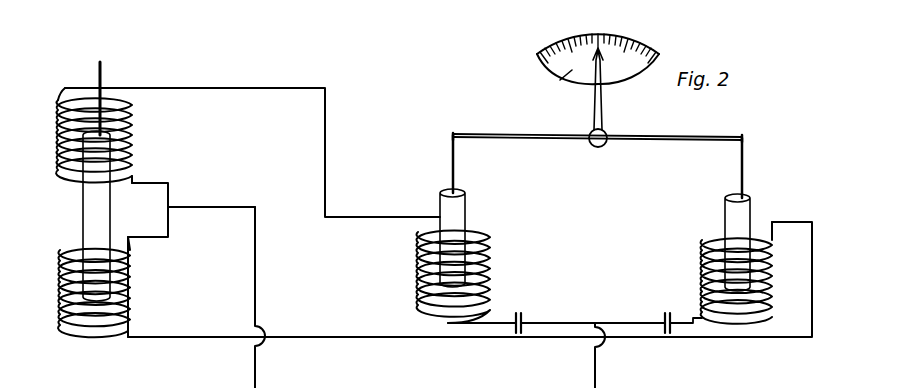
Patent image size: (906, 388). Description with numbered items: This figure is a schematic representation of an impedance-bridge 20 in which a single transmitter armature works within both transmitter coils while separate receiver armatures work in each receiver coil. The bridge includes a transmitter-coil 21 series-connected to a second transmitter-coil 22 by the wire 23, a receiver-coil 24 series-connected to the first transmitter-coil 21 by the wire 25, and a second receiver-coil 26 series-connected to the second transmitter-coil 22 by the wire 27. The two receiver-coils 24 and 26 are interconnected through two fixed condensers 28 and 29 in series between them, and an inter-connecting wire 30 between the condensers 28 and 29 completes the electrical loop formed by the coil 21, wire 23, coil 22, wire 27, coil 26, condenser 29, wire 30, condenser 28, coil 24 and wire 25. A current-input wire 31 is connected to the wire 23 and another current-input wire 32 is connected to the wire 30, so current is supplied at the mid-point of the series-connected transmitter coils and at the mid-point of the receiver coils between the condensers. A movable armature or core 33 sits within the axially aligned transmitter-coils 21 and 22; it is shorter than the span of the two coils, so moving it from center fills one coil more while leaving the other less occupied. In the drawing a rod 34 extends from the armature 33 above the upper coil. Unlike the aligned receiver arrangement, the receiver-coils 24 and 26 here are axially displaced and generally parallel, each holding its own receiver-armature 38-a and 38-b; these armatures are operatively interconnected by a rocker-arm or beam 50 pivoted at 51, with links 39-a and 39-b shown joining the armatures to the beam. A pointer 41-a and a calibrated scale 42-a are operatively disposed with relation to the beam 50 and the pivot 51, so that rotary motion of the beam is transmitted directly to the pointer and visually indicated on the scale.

The impedance-bridge 20 is at (265, 152).
The transmitter-coil 21 is at (133, 128).
The second transmitter-coil 22 is at (130, 298).
The wire 23 is at (168, 195).
The receiver-coil 24 is at (490, 270).
The wire 25 is at (325, 135).
The second receiver-coil 26 is at (700, 258).
The wire 27 is at (340, 337).
The fixed condenser 28 is at (519, 318).
The fixed condenser 29 is at (662, 318).
The inter-connecting wire 30 is at (583, 323).
The current-input wire 31 is at (257, 272).
The current-input wire 32 is at (590, 372).
The armature 33 is at (93, 205).
The rod 34 is at (102, 75).
The receiver-armature 38-a is at (460, 213).
The receiver-armature 38-b is at (745, 215).
The link 39-a is at (455, 168).
The link 39-b is at (744, 170).
The pointer 41-a is at (622, 60).
The calibrated scale 42-a is at (560, 80).
The beam 50 is at (660, 135).
The pivot 51 is at (592, 147).